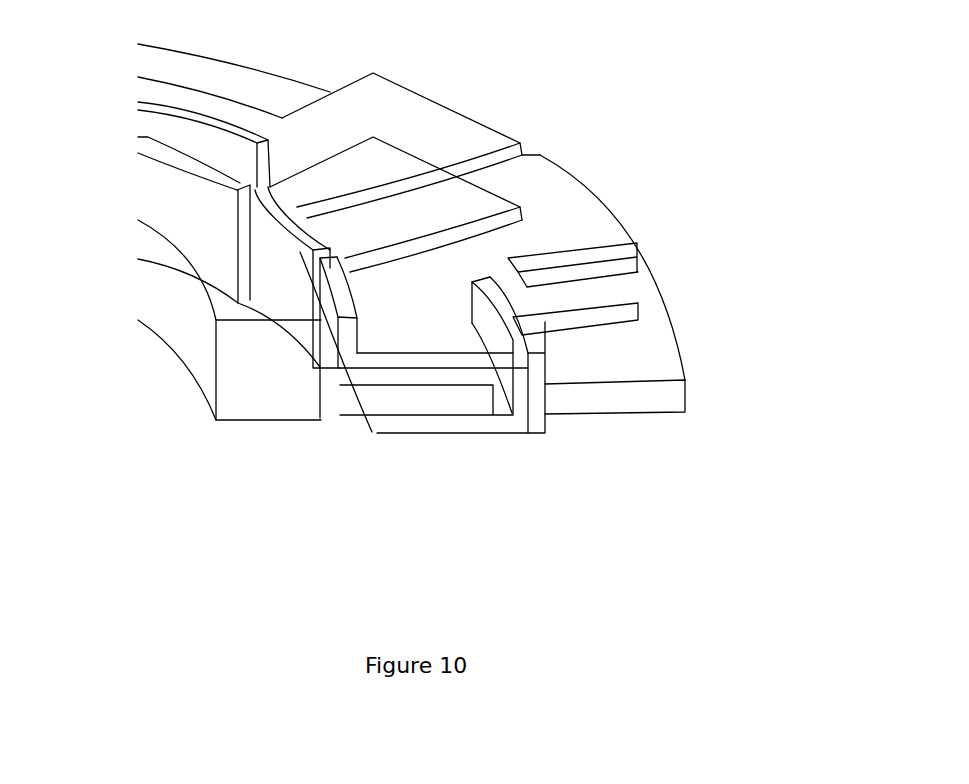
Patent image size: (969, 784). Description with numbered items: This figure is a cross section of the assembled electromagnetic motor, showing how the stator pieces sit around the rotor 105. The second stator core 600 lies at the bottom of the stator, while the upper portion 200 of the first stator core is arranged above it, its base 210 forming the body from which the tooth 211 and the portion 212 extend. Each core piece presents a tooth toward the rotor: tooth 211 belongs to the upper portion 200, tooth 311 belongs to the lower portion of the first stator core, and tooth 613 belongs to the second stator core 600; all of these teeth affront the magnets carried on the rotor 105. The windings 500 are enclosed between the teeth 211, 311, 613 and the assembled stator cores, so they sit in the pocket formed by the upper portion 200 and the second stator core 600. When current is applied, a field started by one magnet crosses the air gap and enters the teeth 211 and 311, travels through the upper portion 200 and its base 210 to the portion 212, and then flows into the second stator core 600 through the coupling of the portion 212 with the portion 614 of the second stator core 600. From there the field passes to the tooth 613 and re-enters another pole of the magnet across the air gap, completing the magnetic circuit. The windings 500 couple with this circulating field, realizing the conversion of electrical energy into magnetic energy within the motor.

The rotor 105 is at (192, 370).
The upper portion of first stator core 200 is at (573, 165).
The base 210 is at (495, 260).
The tooth 211 is at (293, 215).
The portion 212 is at (535, 417).
The tooth 311 is at (342, 410).
The windings 500 is at (397, 410).
The second stator core 600 is at (450, 435).
The tooth 613 is at (297, 240).
The portion 614 is at (515, 413).